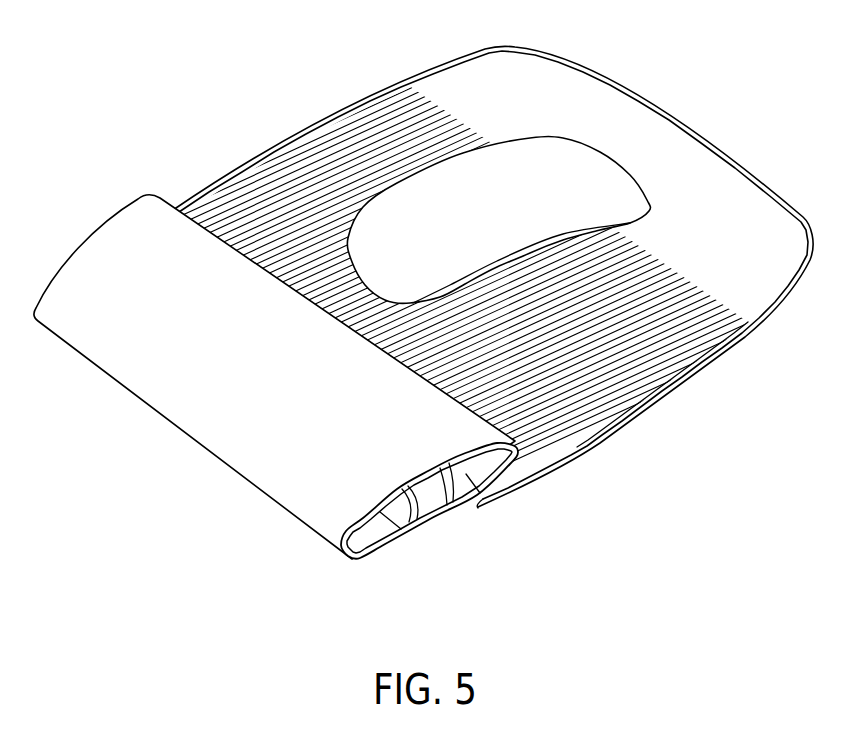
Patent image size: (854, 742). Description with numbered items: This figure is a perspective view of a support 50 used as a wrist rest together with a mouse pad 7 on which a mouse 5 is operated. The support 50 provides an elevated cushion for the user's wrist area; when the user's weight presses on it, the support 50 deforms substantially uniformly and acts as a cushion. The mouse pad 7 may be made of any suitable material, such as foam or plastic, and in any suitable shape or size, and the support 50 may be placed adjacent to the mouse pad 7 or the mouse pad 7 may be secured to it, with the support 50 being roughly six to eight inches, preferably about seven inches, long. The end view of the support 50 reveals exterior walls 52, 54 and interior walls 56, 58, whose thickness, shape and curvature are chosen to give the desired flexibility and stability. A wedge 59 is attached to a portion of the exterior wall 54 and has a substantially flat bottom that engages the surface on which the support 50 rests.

The mouse 5 is at (600, 168).
The mouse pad 7 is at (391, 121).
The support 50 is at (275, 381).
The exterior wall 52 is at (346, 521).
The exterior wall 54 is at (500, 479).
The interior wall 56 is at (447, 490).
The interior wall 58 is at (413, 508).
The wedge 59 is at (432, 532).